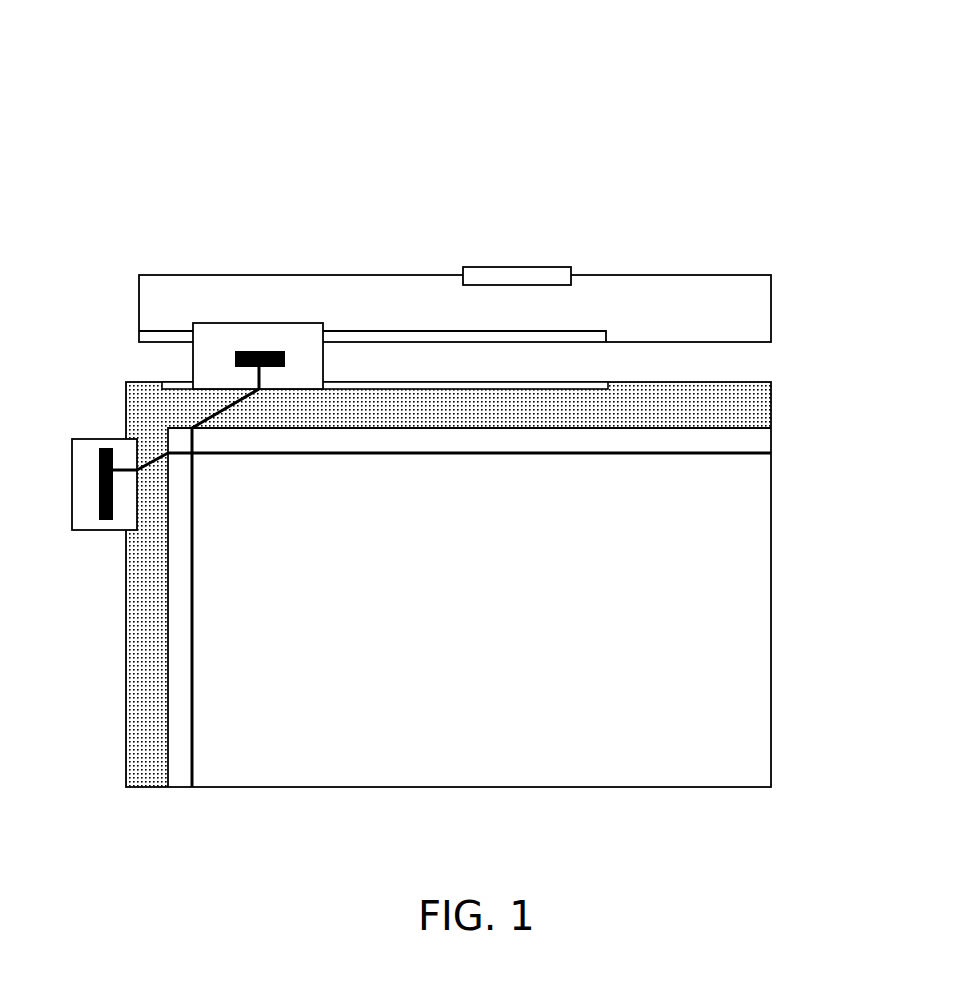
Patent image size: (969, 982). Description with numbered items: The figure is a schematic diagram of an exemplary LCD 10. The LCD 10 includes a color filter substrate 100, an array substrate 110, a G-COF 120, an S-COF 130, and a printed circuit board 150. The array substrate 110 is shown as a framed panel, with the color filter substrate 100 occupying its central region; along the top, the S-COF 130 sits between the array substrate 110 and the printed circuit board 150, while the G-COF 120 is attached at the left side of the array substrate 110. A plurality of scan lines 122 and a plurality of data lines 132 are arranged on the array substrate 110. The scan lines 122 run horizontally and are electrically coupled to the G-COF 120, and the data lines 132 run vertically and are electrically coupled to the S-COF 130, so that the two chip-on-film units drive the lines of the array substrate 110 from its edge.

The LCD 10 is at (575, 128).
The color filter substrate 100 is at (728, 623).
The array substrate 110 is at (748, 403).
The G-COF 120 is at (82, 520).
The scan lines 122 is at (725, 458).
The S-COF 130 is at (263, 333).
The data lines 132 is at (194, 747).
The printed circuit board 150 is at (690, 290).